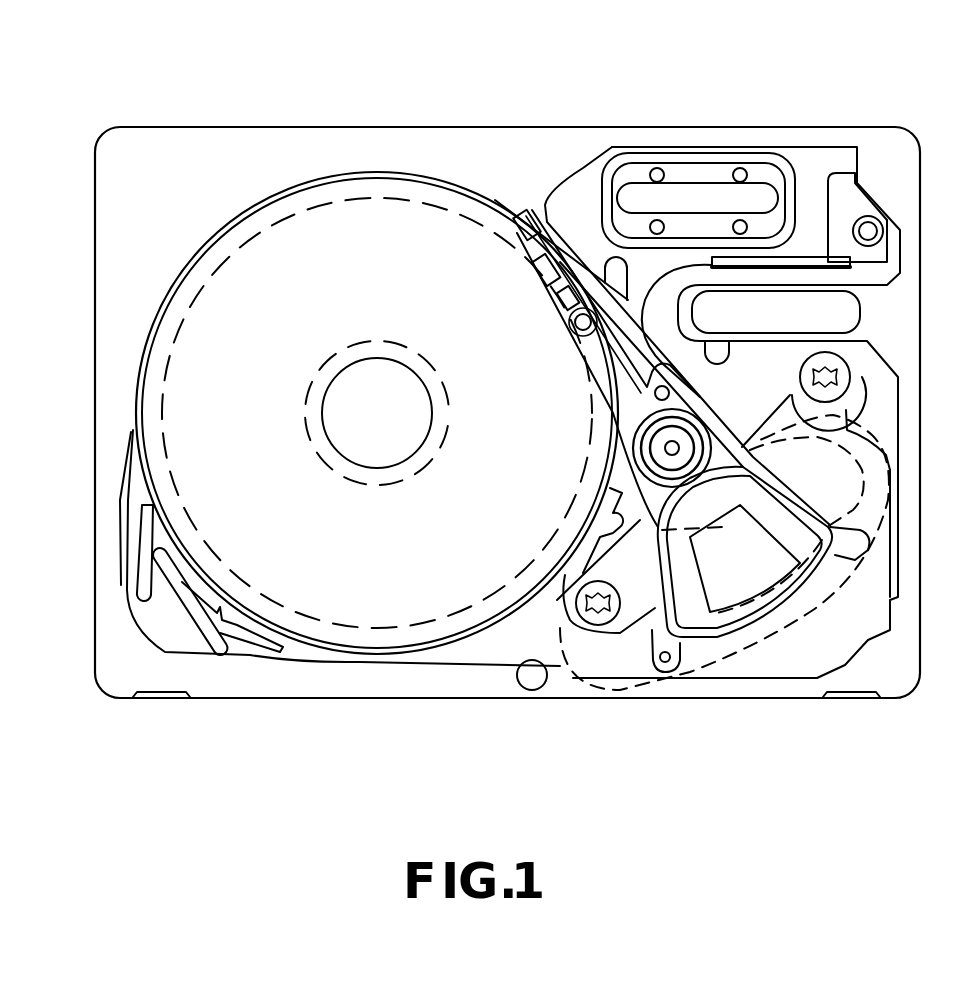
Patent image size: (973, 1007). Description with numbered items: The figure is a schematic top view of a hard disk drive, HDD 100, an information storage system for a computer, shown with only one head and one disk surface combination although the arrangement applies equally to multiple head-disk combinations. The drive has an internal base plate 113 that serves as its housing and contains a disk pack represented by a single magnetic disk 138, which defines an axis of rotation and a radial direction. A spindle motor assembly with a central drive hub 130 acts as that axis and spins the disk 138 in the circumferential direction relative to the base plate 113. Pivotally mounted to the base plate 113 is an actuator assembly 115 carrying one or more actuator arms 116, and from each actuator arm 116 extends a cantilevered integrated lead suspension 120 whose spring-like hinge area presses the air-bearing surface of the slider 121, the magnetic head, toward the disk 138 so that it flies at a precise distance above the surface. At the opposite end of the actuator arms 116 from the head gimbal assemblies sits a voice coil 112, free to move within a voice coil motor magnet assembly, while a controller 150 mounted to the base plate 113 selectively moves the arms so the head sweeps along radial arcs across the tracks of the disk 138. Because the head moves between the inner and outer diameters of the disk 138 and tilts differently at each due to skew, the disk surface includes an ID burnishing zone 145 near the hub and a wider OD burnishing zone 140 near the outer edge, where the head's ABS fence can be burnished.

The HDD 100 is at (242, 107).
The voice coil 112 is at (620, 650).
The internal base plate 113 is at (454, 125).
The actuator assembly 115 is at (632, 475).
The actuator arm 116 is at (618, 353).
The integrated lead suspension 120 is at (537, 282).
The slider 121 is at (524, 222).
The central drive hub 130 is at (377, 413).
The magnetic disk 138 is at (342, 176).
The OD burnishing zone 140 is at (190, 292).
The ID burnishing zone 145 is at (350, 486).
The controller 150 is at (840, 645).